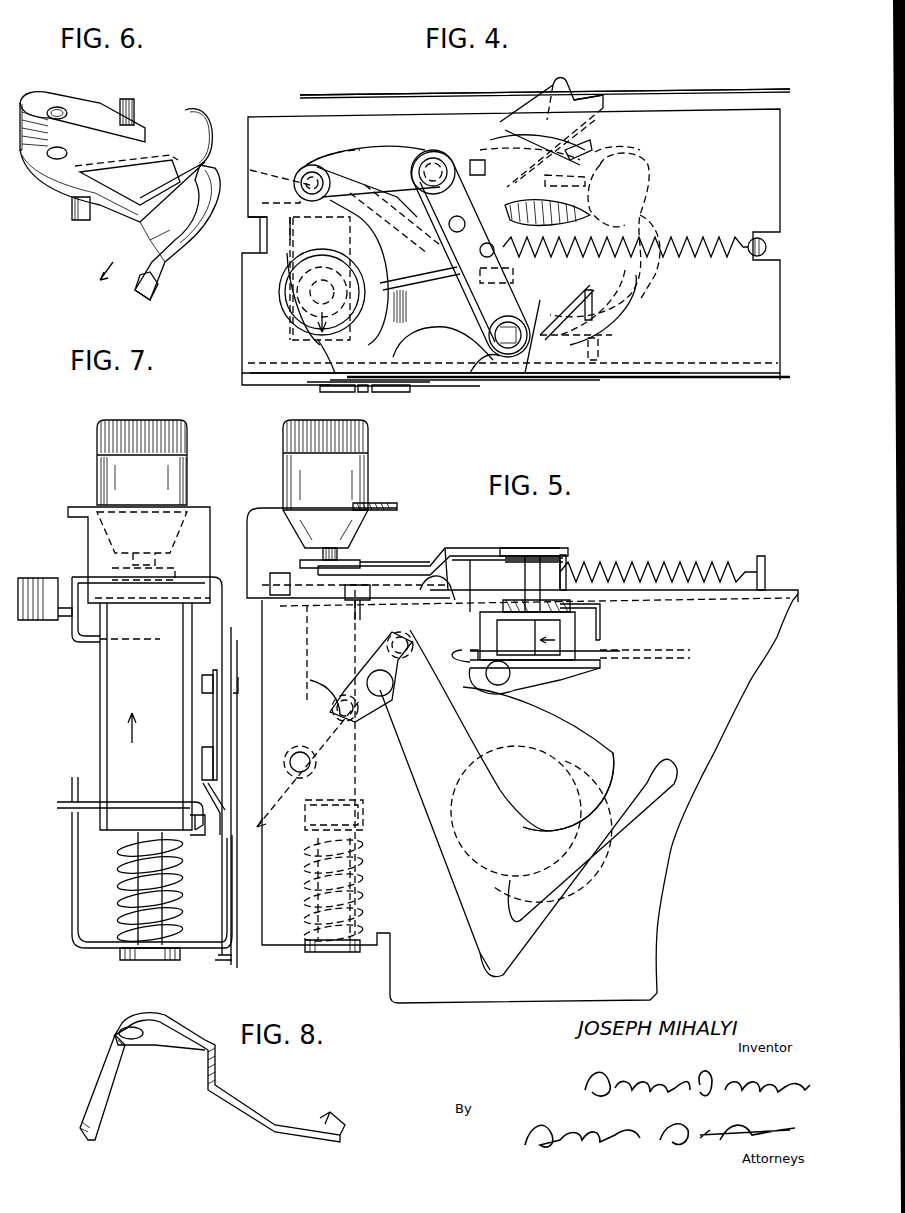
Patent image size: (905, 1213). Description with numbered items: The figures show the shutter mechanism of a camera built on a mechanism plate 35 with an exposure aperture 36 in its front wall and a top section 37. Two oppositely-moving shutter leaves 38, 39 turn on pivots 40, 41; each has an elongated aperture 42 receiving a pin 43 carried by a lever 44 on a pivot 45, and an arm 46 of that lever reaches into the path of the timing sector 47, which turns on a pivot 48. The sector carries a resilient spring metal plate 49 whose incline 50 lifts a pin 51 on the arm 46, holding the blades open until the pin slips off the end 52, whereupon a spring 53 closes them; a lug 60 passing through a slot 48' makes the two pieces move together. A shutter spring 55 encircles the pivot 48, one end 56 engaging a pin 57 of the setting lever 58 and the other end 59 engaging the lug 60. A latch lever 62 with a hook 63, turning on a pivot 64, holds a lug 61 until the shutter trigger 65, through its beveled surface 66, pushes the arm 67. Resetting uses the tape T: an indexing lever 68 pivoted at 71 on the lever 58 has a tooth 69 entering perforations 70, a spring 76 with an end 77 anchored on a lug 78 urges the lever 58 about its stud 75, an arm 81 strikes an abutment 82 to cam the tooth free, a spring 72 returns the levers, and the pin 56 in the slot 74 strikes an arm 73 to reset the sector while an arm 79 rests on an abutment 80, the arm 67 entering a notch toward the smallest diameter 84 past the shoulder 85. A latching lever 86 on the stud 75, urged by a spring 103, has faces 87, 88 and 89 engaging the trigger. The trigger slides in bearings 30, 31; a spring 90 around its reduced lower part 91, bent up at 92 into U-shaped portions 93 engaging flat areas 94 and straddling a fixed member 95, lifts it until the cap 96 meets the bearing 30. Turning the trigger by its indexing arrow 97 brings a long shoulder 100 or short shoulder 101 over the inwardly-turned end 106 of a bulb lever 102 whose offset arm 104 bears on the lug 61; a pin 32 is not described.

In FIG. 4, the metal tape T is at (735, 88).
In FIG. 7, the bearing 30 is at (88, 948).
In FIG. 5, the bearing 30 is at (295, 945).
In FIG. 4, the bearing 31 is at (300, 338).
In FIG. 7, the bearing 31 is at (68, 509).
In FIG. 5, the bearing 31 is at (262, 507).
In FIG. 4, the pin 32 is at (265, 186).
In FIG. 4, the mechanism plate 35 is at (762, 375).
In FIG. 7, the mechanism plate 35 is at (220, 960).
In FIG. 5, the mechanism plate 35 is at (735, 690).
In FIG. 5, the exposure aperture 36 is at (575, 775).
In FIG. 4, the top section 37 is at (781, 350).
In FIG. 7, the top section 37 is at (223, 600).
In FIG. 5, the top section 37 is at (788, 588).
In FIG. 4, the shutter leaf 38 is at (660, 380).
In FIG. 7, the shutter leaf 38 is at (236, 888).
In FIG. 5, the shutter leaf 38 is at (470, 880).
In FIG. 4, the shutter leaf 39 is at (630, 381).
In FIG. 7, the shutter leaf 39 is at (237, 968).
In FIG. 5, the shutter leaf 39 is at (600, 790).
In FIG. 4, the pivot 40 is at (415, 388).
In FIG. 5, the pivot 40 is at (414, 650).
In FIG. 4, the pivot 41 is at (325, 393).
In FIG. 5, the pivot 41 is at (332, 710).
In FIG. 5, the elongated aperture 42 is at (400, 688).
In FIG. 4, the pin 43 is at (385, 394).
In FIG. 7, the pin 43 is at (205, 676).
In FIG. 5, the pin 43 is at (367, 681).
In FIG. 5, the lever 44 is at (312, 684).
In FIG. 5, the pivot 45 is at (295, 750).
In FIG. 4, the arm 46 is at (455, 375).
In FIG. 7, the arm 46 is at (213, 672).
In FIG. 5, the arm 46 is at (470, 690).
In FIG. 6, the timing sector 47 is at (118, 208).
In FIG. 4, the timing sector 47 is at (650, 185).
In FIG. 5, the timing sector 47 is at (670, 658).
In FIG. 4, the pivot 48 is at (531, 113).
In FIG. 5, the pivot 48 is at (541, 586).
In FIG. 6, the slot 48' is at (198, 123).
In FIG. 6, the spring metal plate 49 is at (175, 225).
In FIG. 4, the spring metal plate 49 is at (635, 283).
In FIG. 5, the spring metal plate 49 is at (592, 668).
In FIG. 6, the incline 50 is at (152, 290).
In FIG. 5, the incline 50 is at (548, 683).
In FIG. 5, the pin 51 is at (508, 683).
In FIG. 6, the end 52 is at (214, 165).
In FIG. 4, the end 52 is at (655, 230).
In FIG. 5, the end 52 is at (672, 650).
In FIG. 7, the spring 53 is at (220, 828).
In FIG. 5, the spring 53 is at (290, 800).
In FIG. 4, the shutter spring 55 is at (478, 160).
In FIG. 5, the shutter spring 55 is at (528, 640).
In FIG. 4, the spring end 56 is at (448, 224).
In FIG. 5, the spring end 56 is at (470, 598).
In FIG. 4, the pin 57 is at (480, 251).
In FIG. 5, the pin 57 is at (450, 585).
In FIG. 4, the setting lever 58 is at (530, 360).
In FIG. 5, the setting lever 58 is at (470, 575).
In FIG. 4, the spring end 59 is at (620, 153).
In FIG. 6, the lug 60 is at (135, 105).
In FIG. 4, the lug 60 is at (585, 150).
In FIG. 6, the lug 61 is at (72, 207).
In FIG. 4, the lug 61 is at (514, 275).
In FIG. 5, the lug 61 is at (465, 652).
In FIG. 4, the latch lever 62 is at (262, 203).
In FIG. 8, the latch lever 62 is at (190, 1045).
In FIG. 4, the hook 63 is at (470, 335).
In FIG. 8, the hook 63 is at (345, 1120).
In FIG. 4, the pivot 64 is at (305, 172).
In FIG. 4, the shutter trigger 65 is at (280, 293).
In FIG. 7, the shutter trigger 65 is at (97, 466).
In FIG. 5, the shutter trigger 65 is at (368, 477).
In FIG. 7, the beveled surface 66 is at (105, 535).
In FIG. 5, the beveled surface 66 is at (300, 533).
In FIG. 4, the arm 67 is at (265, 322).
In FIG. 7, the arm 67 is at (200, 577).
In FIG. 5, the arm 67 is at (280, 573).
In FIG. 8, the arm 67 is at (100, 1068).
In FIG. 4, the indexing lever 68 is at (545, 130).
In FIG. 4, the tooth 69 is at (583, 95).
In FIG. 4, the perforations 70 is at (330, 94).
In FIG. 4, the pivot 71 is at (425, 160).
In FIG. 4, the spring 72 is at (700, 252).
In FIG. 5, the spring 72 is at (635, 570).
In FIG. 6, the arm 73 is at (95, 110).
In FIG. 4, the arm 73 is at (587, 183).
In FIG. 4, the slot 74 is at (582, 214).
In FIG. 4, the stud 75 is at (508, 356).
In FIG. 4, the spring 76 is at (460, 233).
In FIG. 4, the spring end 77 is at (545, 160).
In FIG. 4, the lug 78 is at (560, 84).
In FIG. 4, the arm 79 is at (430, 280).
In FIG. 5, the arm 79 is at (448, 560).
In FIG. 5, the abutment 80 is at (345, 592).
In FIG. 4, the arm 81 is at (352, 160).
In FIG. 4, the abutment 82 is at (300, 184).
In FIG. 5, the smallest diameter 84 is at (345, 560).
In FIG. 5, the shoulder 85 is at (380, 562).
In FIG. 4, the latching lever 86 is at (430, 332).
In FIG. 4, the trigger-engaging face 87 is at (317, 340).
In FIG. 5, the upward formation 88 is at (385, 580).
In FIG. 4, the trigger-engaging face 89 is at (362, 393).
In FIG. 7, the spring 90 is at (185, 880).
In FIG. 5, the spring 90 is at (303, 885).
In FIG. 7, the lower part 91 is at (137, 874).
In FIG. 7, the upward bend 92 is at (190, 820).
In FIG. 5, the upward bend 92 is at (362, 822).
In FIG. 4, the U-shaped portion 93 is at (272, 222).
In FIG. 7, the U-shaped portion 93 is at (80, 802).
In FIG. 5, the U-shaped portion 93 is at (335, 800).
In FIG. 7, the flat areas 94 is at (146, 716).
In FIG. 5, the flat areas 94 is at (307, 650).
In FIG. 7, the fixed member 95 is at (72, 815).
In FIG. 7, the cap 96 is at (130, 960).
In FIG. 5, the cap 96 is at (340, 953).
In FIG. 4, the indexing arrow 97 is at (300, 360).
In FIG. 5, the shoulder 100 is at (307, 612).
In FIG. 5, the shoulder 101 is at (362, 604).
In FIG. 4, the bulb lever 102 is at (575, 333).
In FIG. 5, the bulb lever 102 is at (602, 605).
In FIG. 4, the spring 103 is at (620, 335).
In FIG. 4, the offset arm 104 is at (395, 215).
In FIG. 4, the inwardly-turned end 106 is at (340, 262).